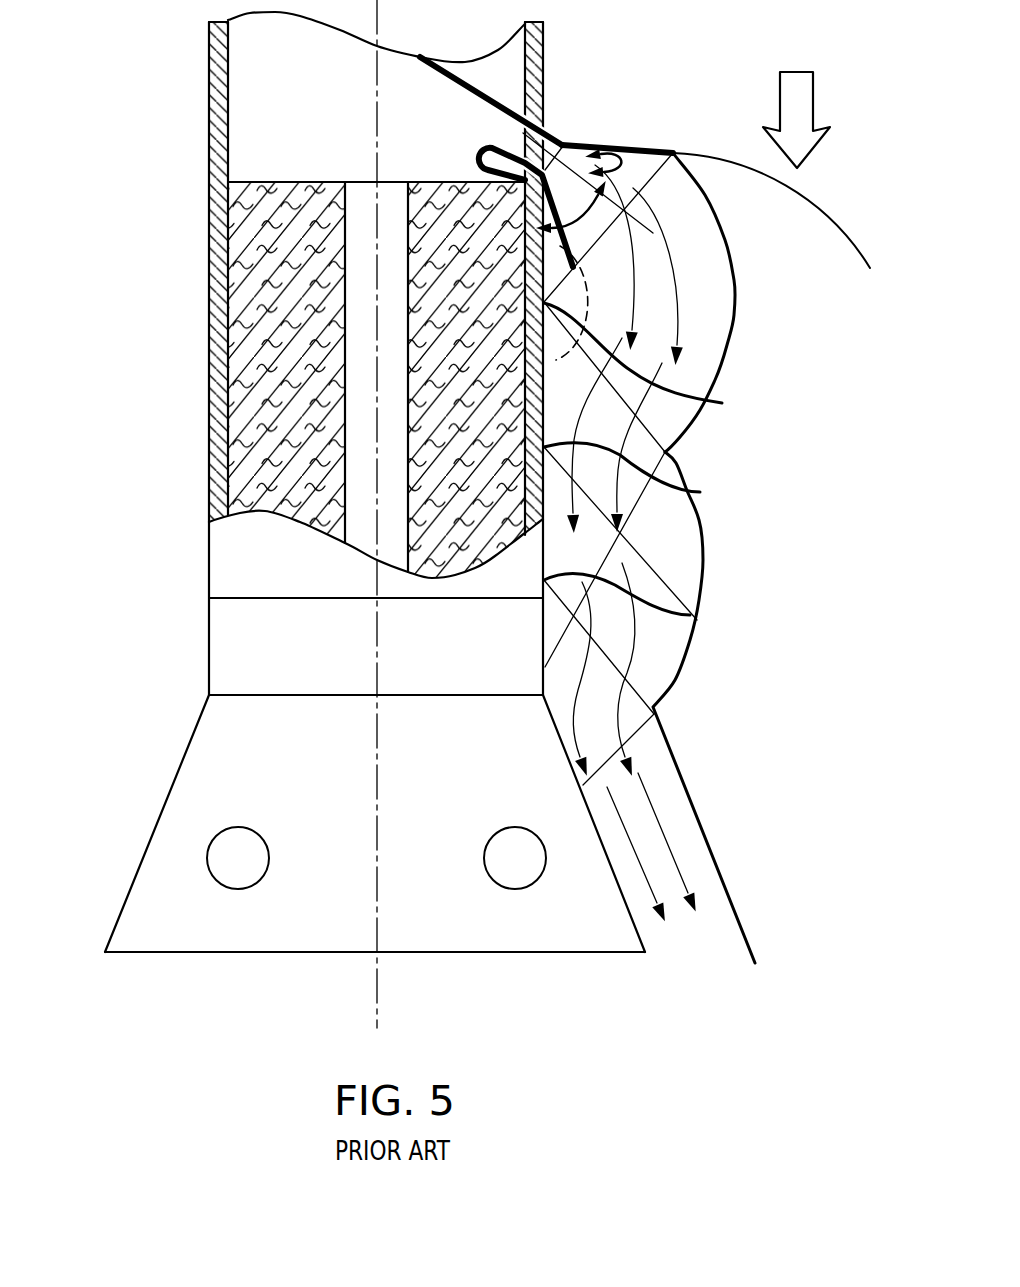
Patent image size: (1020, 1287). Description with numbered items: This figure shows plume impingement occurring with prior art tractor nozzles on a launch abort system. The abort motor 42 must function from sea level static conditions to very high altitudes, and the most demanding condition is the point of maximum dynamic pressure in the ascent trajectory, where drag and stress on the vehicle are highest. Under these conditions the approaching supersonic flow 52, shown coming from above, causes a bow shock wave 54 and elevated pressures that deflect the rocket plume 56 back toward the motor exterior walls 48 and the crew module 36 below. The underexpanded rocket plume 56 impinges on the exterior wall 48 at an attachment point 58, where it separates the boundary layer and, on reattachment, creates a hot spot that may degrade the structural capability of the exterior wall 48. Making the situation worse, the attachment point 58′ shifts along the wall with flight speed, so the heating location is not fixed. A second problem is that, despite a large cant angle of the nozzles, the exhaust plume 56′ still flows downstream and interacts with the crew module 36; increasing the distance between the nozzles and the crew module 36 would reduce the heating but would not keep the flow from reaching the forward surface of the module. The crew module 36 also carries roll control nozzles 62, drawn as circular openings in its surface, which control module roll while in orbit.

The crew module 36 is at (203, 767).
The abort motor 42 is at (186, 259).
The exterior wall 48 is at (208, 120).
The approaching supersonic flow 52 is at (778, 105).
The bow shock wave 54 is at (833, 218).
The rocket plume 56 is at (733, 303).
The exhaust plume 56′ is at (645, 728).
The attachment point 58 is at (649, 361).
The attachment point 58′ is at (700, 492).
The roll control nozzle 62 is at (515, 860).